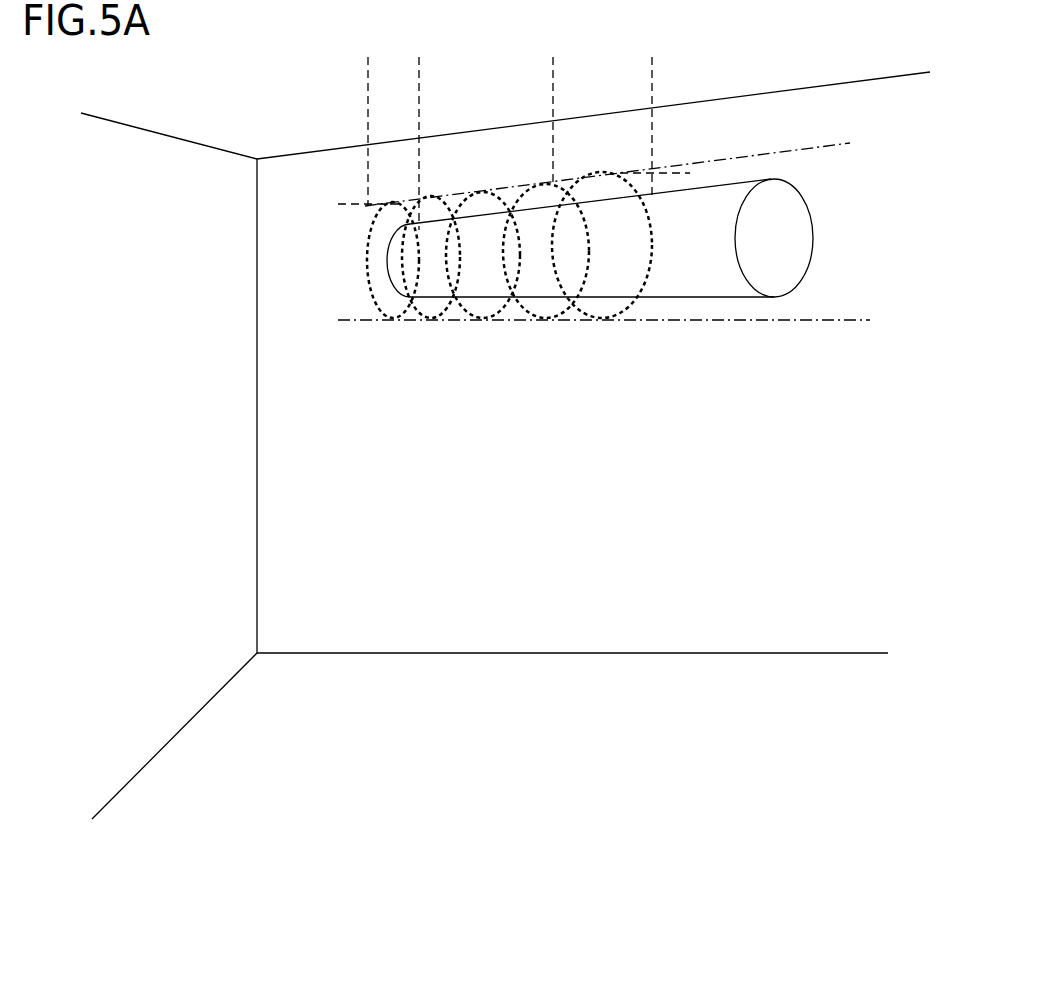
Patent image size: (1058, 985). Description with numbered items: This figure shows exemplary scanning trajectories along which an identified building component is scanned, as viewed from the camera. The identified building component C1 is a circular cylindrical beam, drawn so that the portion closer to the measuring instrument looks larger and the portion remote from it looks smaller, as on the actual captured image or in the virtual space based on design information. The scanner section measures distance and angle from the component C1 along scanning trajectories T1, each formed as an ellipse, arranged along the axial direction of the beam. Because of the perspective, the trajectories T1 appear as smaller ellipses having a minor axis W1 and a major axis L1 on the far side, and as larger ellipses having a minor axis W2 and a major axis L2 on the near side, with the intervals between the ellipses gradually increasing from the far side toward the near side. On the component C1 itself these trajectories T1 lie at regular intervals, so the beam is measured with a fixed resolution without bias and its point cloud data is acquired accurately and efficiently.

The scanning trajectories T1 is at (380, 313).
The identified building component C1 is at (718, 298).
The minor axis W1 is at (418, 72).
The minor axis W2 is at (554, 77).
The major axis L1 is at (347, 205).
The major axis L2 is at (675, 174).